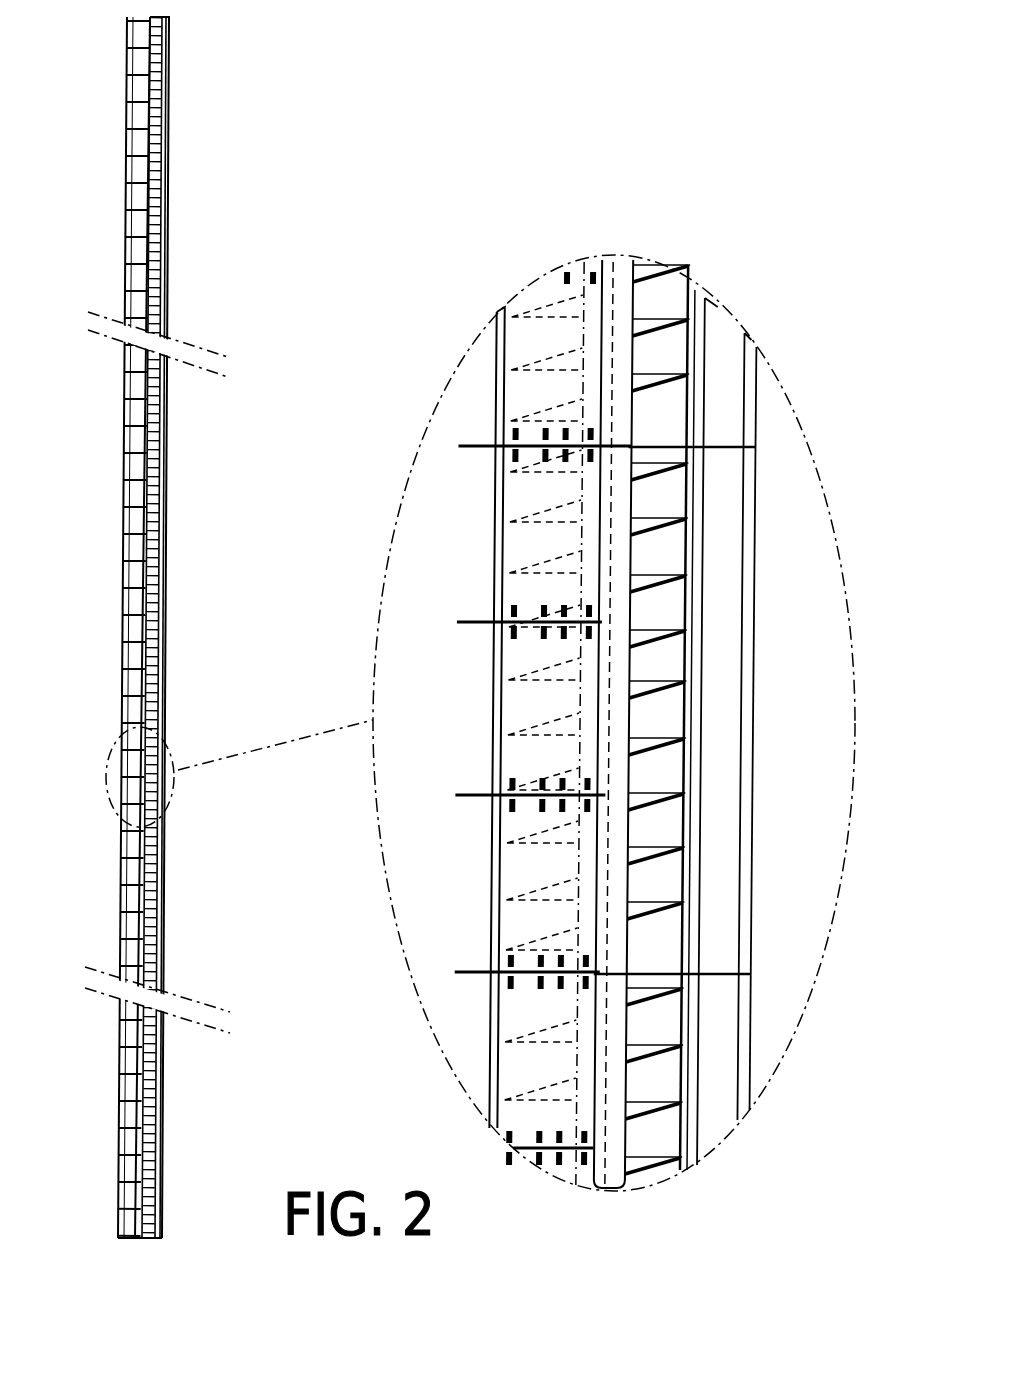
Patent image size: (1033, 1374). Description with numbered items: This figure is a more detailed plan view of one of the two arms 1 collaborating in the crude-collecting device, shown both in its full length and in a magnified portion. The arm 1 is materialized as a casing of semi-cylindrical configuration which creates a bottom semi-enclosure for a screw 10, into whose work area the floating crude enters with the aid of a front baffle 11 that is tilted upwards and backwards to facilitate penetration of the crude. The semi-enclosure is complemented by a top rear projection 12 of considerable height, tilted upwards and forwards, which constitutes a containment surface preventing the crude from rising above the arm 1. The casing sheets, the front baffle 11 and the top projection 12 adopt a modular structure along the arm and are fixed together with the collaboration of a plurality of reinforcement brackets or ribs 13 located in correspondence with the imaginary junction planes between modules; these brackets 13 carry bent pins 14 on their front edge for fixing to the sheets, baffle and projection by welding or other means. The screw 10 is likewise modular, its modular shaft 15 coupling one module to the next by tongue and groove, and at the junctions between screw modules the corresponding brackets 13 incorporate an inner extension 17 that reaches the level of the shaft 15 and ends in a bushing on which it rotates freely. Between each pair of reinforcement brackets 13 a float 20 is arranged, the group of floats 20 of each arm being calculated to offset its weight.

The arm 1 is at (178, 210).
The screw 10 is at (655, 460).
The front baffle 11 is at (158, 507).
The top rear projection 12 is at (140, 247).
The reinforcement brackets 13 is at (458, 972).
The bent pins 14 is at (513, 1147).
The shaft 15 is at (580, 555).
The inner extension 17 is at (620, 447).
The float 20 is at (495, 680).